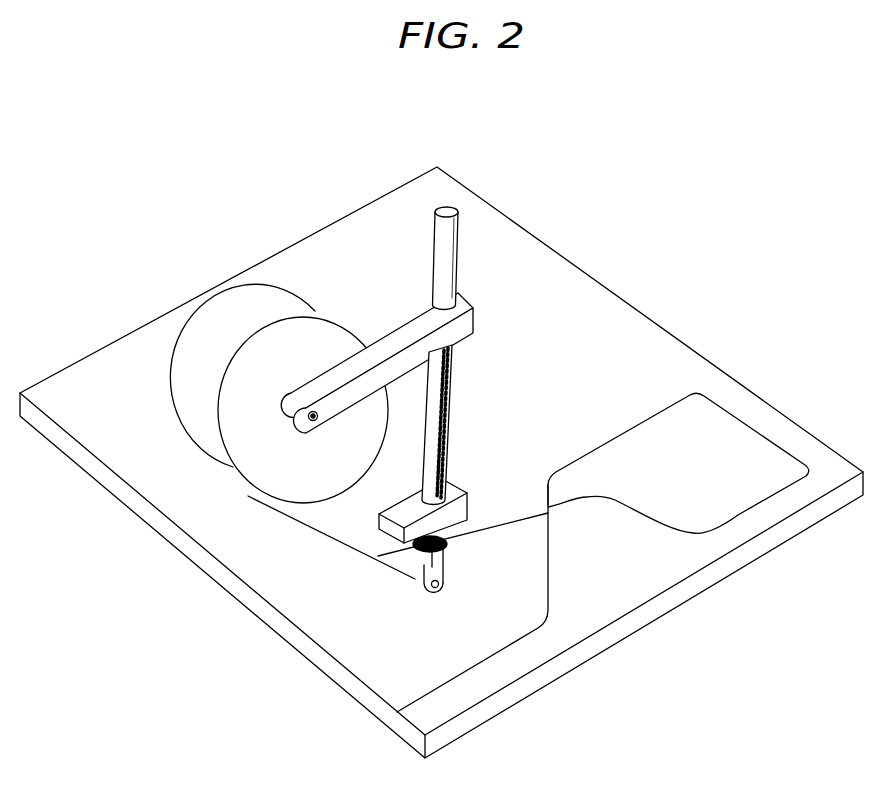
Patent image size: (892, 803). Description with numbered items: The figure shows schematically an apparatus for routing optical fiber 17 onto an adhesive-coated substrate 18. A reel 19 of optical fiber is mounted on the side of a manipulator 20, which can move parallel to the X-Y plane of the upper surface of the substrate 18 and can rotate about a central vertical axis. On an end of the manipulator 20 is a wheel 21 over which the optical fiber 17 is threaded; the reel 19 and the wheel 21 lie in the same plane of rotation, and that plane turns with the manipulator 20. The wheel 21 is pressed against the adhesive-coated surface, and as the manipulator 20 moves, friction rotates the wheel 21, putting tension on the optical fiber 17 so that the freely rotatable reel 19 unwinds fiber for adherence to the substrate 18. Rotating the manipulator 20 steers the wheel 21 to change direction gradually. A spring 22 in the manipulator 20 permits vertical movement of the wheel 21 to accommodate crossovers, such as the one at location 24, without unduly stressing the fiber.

The optical fiber 17 is at (328, 535).
The adhesive-coated substrate 18 is at (367, 660).
The reel 19 is at (316, 310).
The manipulator 20 is at (456, 268).
The wheel 21 is at (441, 585).
The spring 22 is at (420, 540).
The location 24 is at (548, 513).